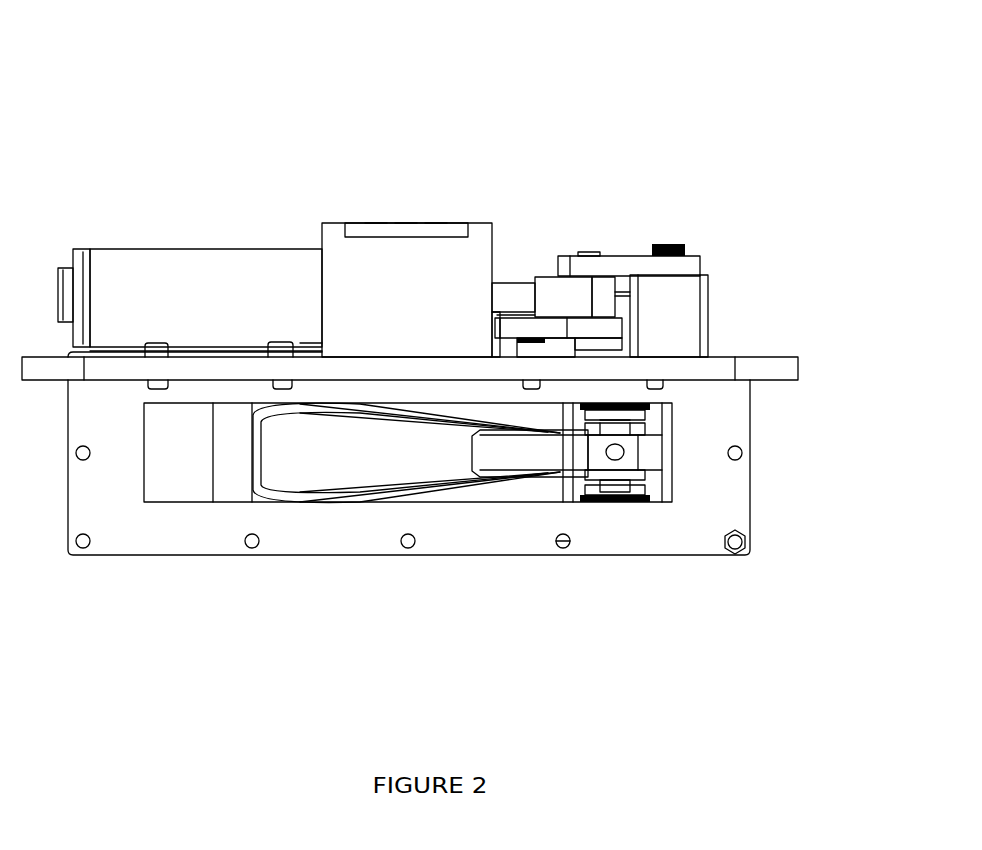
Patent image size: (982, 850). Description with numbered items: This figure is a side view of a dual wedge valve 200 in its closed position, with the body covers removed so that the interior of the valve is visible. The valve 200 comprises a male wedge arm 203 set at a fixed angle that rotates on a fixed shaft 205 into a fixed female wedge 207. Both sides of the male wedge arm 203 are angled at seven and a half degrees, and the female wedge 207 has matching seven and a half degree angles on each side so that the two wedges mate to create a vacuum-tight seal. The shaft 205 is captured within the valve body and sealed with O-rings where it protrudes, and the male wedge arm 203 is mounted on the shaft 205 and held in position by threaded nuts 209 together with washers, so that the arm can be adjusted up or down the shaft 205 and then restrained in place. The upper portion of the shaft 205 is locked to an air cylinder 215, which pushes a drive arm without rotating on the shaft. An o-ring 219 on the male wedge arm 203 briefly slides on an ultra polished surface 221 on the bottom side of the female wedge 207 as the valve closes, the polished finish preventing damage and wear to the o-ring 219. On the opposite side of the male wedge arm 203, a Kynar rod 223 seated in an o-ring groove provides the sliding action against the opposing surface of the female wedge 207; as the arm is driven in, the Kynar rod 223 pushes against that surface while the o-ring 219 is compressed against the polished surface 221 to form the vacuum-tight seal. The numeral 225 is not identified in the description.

The dual wedge valve 200 is at (381, 133).
The male wedge arm 203 is at (322, 451).
The fixed shaft 205 is at (630, 430).
The fixed female wedge 207 is at (537, 415).
The threaded nuts 209 is at (655, 417).
The air cylinder 215 is at (166, 282).
The o-ring 219 is at (349, 497).
The ultra polished surface 221 is at (437, 492).
The Kynar rod 223 is at (452, 425).
The solenoid 225 is at (622, 265).